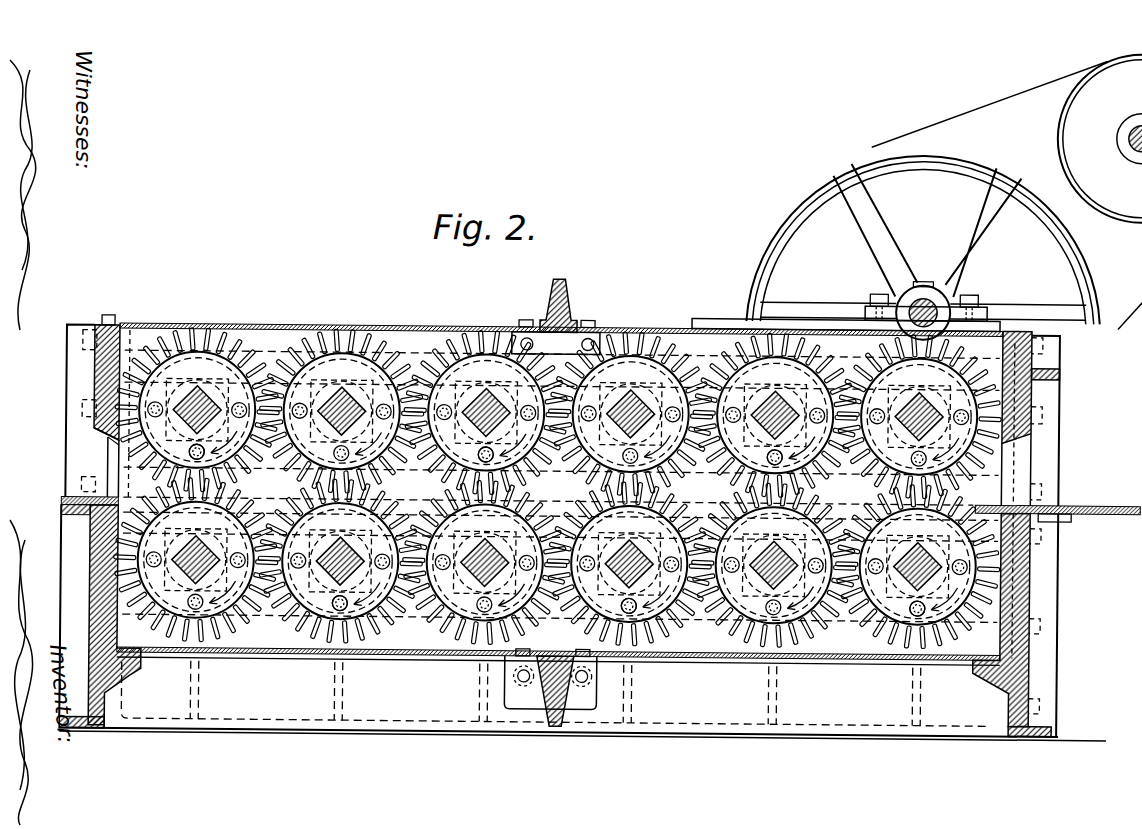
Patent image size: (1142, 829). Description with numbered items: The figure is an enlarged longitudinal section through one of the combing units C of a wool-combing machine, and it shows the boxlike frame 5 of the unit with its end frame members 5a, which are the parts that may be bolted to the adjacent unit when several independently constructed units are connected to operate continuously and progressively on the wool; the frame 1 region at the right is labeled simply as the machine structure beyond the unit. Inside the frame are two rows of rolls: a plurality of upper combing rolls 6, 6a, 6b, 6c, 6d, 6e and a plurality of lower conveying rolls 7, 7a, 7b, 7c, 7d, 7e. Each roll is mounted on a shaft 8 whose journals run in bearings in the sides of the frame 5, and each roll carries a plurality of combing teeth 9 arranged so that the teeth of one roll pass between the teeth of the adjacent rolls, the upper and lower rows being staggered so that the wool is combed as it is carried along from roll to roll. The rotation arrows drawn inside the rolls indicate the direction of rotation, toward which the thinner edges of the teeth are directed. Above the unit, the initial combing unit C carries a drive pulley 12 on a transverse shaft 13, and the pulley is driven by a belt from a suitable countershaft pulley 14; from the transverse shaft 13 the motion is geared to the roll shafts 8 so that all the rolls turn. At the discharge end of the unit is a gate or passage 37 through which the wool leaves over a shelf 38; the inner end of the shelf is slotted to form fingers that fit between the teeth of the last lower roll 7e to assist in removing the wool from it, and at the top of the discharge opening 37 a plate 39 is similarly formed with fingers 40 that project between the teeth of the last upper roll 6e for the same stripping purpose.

The combing unit C is at (584, 517).
The receiving hopper 1 is at (1108, 426).
The frame 5 is at (568, 298).
The end frame member 5a is at (92, 562).
The upper combing roll 6 is at (919, 416).
The upper combing roll 6a is at (775, 415).
The upper combing roll 6b is at (631, 413).
The upper combing roll 6c is at (486, 412).
The upper combing roll 6d is at (342, 410).
The upper combing roll 6e is at (197, 409).
The lower conveying roll 7 is at (918, 566).
The lower conveying roll 7a is at (774, 565).
The lower conveying roll 7b is at (629, 563).
The lower conveying roll 7c is at (485, 562).
The lower conveying roll 7d is at (340, 560).
The lower conveying roll 7e is at (196, 559).
The shaft 8 is at (190, 424).
The combing teeth 9 is at (296, 471).
The drive pulley 12 is at (766, 239).
The transverse shaft 13 is at (935, 299).
The countershaft pulley 14 is at (1072, 122).
The gate or passage 37 is at (100, 458).
The shelf 38 is at (105, 497).
The plate 39 is at (110, 437).
The fingers 40 is at (113, 445).